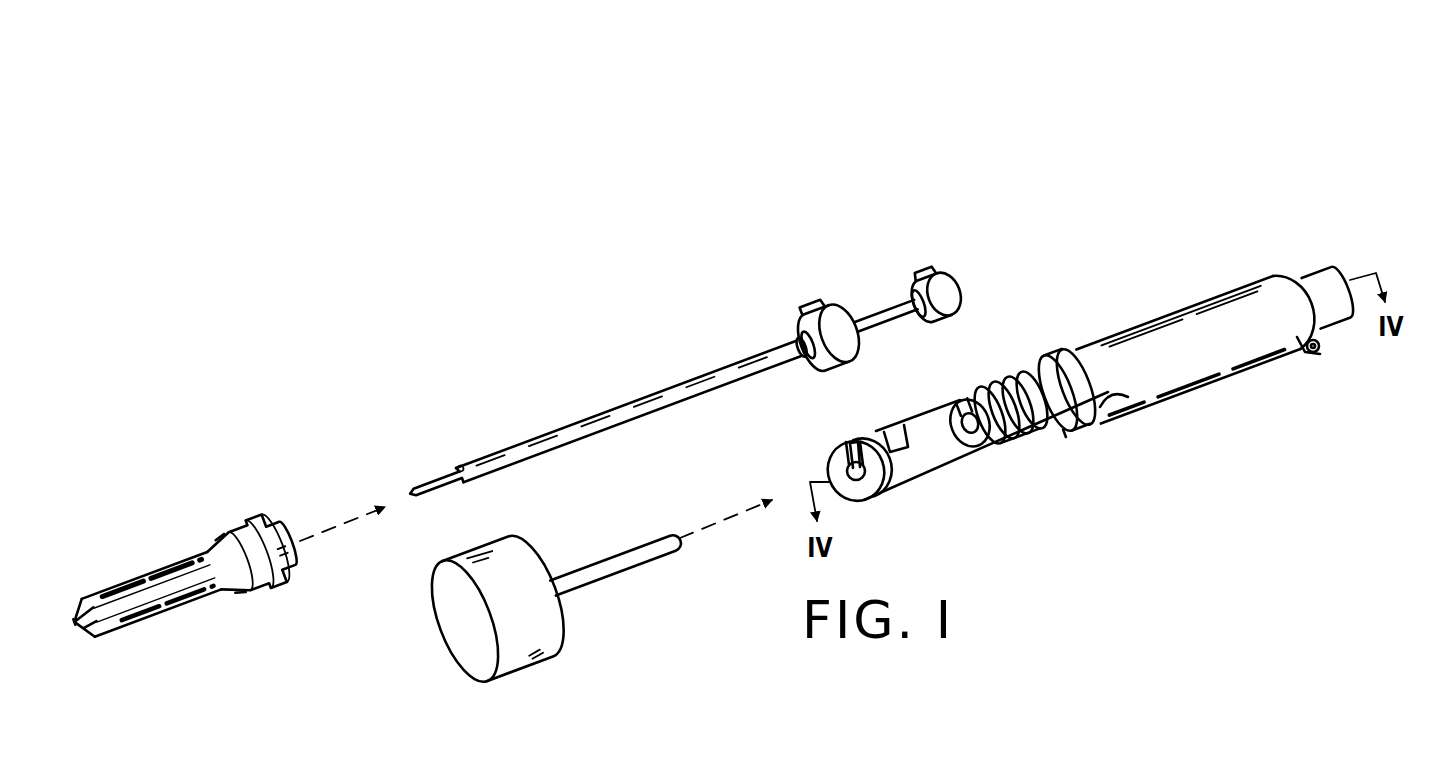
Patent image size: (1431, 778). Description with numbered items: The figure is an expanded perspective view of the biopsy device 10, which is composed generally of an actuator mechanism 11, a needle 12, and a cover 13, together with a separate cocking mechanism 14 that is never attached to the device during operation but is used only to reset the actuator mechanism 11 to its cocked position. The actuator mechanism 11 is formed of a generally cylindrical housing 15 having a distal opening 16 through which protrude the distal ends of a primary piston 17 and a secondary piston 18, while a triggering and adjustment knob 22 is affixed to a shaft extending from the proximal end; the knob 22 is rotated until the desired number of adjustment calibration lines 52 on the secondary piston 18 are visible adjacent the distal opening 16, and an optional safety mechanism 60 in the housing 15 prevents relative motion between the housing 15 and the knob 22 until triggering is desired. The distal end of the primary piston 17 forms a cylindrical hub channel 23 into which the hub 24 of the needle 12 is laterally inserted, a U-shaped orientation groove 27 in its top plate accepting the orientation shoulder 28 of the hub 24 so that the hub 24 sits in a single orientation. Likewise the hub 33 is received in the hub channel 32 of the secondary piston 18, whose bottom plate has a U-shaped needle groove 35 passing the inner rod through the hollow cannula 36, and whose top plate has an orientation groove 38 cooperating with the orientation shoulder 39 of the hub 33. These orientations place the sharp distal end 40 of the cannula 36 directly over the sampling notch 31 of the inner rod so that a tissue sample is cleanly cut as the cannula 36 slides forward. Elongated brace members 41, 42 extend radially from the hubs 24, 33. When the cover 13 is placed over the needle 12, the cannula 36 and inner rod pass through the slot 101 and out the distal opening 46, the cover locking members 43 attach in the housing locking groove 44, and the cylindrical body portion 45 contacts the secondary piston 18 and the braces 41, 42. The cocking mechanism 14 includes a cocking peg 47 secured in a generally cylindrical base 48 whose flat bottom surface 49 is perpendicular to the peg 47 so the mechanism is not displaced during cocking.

The biopsy device 10 is at (1129, 258).
The actuator mechanism 11 is at (1188, 292).
The needle 12 is at (722, 340).
The cover 13 is at (163, 532).
The cocking mechanism 14 is at (583, 612).
The housing 15 is at (1221, 313).
The distal opening 16 is at (1062, 432).
The primary piston 17 is at (1008, 428).
The secondary piston 18 is at (930, 465).
The triggering and adjustment knob 22 is at (1323, 288).
The hub channel 23 is at (1012, 445).
The hub 24 is at (960, 288).
The orientation groove 27 is at (950, 403).
The orientation shoulder 28 is at (920, 303).
The sampling notch 31 is at (443, 477).
The hub channel 32 is at (858, 435).
The hub 33 is at (846, 312).
The needle groove 35 is at (888, 430).
The hollow cannula 36 is at (660, 403).
The orientation groove 38 is at (838, 461).
The orientation shoulder 39 is at (803, 330).
The sharp distal end 40 is at (458, 465).
The brace member 41 is at (934, 272).
The brace member 42 is at (823, 310).
The cover locking members 43 is at (273, 515).
The housing locking groove 44 is at (1128, 398).
The cylindrical body portion 45 is at (108, 598).
The distal opening 46 is at (77, 633).
The cocking peg 47 is at (587, 572).
The base 48 is at (493, 568).
The bottom surface 49 is at (465, 622).
The adjustment calibration lines 52 is at (1053, 383).
The safety mechanism 60 is at (1315, 356).
The slot 101 is at (192, 583).